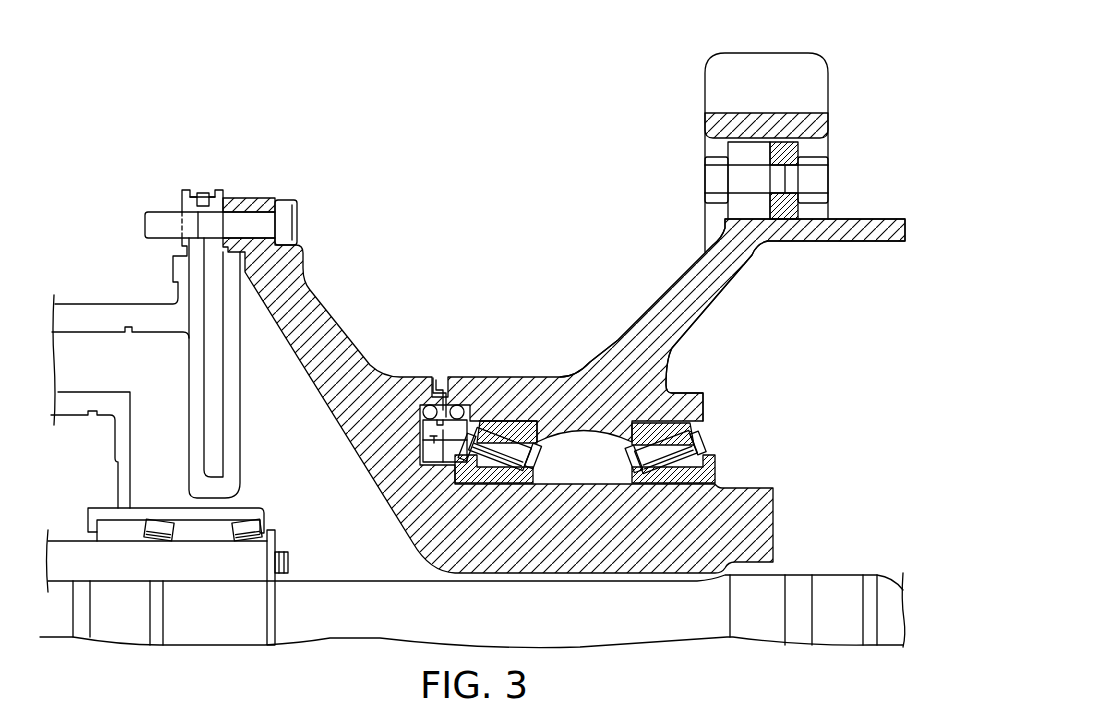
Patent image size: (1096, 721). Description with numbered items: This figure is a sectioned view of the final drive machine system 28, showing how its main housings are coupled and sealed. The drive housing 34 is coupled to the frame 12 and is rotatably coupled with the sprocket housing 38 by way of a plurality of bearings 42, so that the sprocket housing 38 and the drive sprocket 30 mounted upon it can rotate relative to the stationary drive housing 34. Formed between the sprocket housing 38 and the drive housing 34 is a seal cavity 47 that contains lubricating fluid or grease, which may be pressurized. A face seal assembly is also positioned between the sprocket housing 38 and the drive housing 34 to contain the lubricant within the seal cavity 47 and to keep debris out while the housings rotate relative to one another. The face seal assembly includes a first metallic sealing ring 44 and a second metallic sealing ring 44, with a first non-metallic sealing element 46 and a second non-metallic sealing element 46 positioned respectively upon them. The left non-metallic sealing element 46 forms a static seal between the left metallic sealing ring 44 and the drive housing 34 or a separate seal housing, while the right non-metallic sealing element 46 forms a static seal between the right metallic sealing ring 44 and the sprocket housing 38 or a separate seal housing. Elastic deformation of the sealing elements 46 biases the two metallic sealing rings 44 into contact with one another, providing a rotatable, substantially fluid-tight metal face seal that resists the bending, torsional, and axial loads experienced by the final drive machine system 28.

The frame 12 is at (100, 304).
The final drive machine system 28 is at (150, 163).
The drive sprocket 30 is at (818, 70).
The drive housing 34 is at (357, 349).
The sprocket housing 38 is at (618, 340).
The bearings 42 is at (539, 436).
The metallic sealing ring 44 is at (428, 440).
The non-metallic sealing element 46 is at (441, 377).
The seal cavity 47 is at (413, 470).